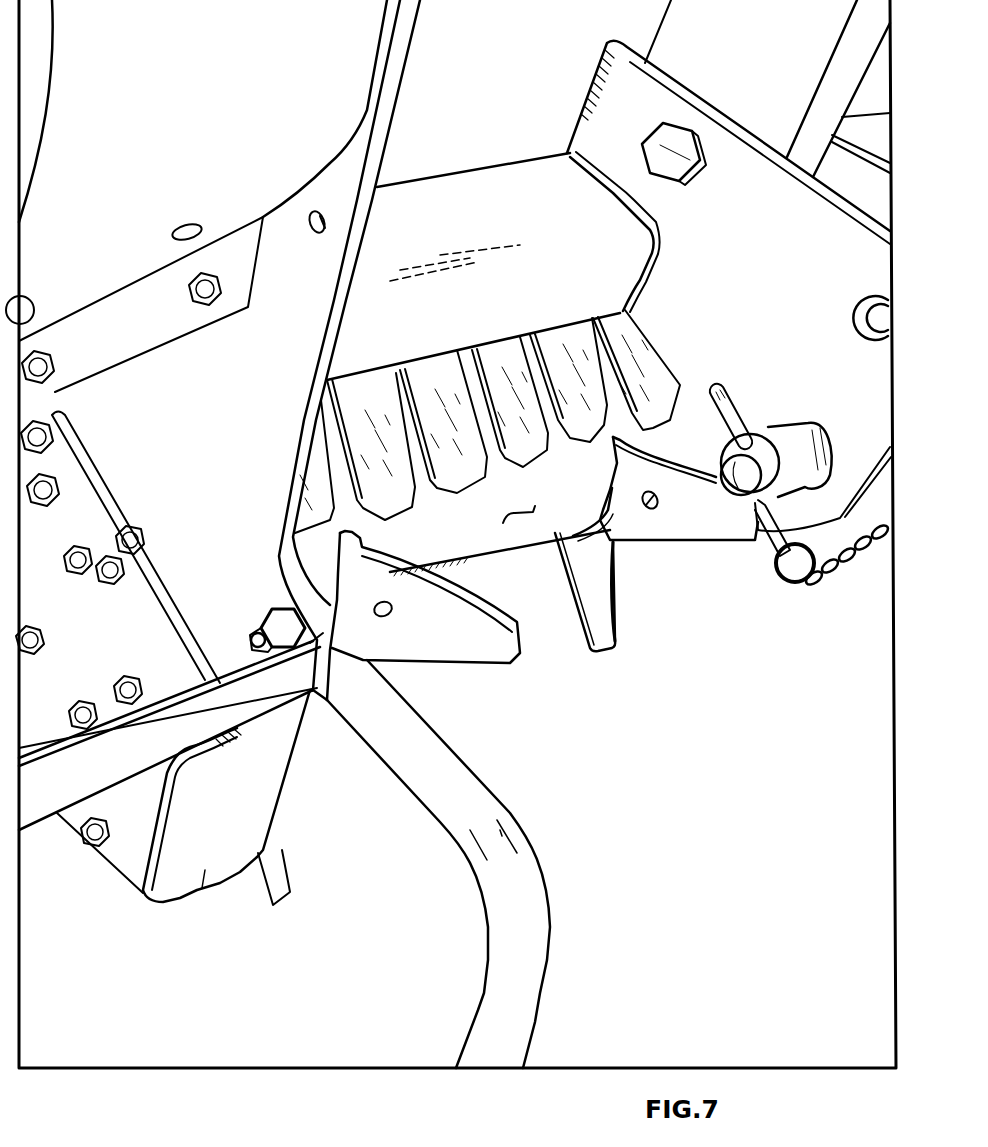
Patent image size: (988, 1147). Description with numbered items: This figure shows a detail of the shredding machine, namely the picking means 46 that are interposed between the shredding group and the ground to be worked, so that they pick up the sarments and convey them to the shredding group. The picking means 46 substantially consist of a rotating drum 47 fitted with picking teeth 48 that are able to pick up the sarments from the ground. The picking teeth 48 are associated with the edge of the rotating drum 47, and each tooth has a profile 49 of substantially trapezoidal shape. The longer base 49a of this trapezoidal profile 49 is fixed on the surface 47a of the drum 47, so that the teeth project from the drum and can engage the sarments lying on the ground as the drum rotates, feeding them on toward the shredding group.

The picking means 46 is at (587, 663).
The rotating drum 47 is at (473, 570).
The surface of the drum 47a is at (523, 515).
The picking teeth 48 is at (697, 558).
The profile 49 is at (725, 520).
The longer base 49a is at (607, 500).